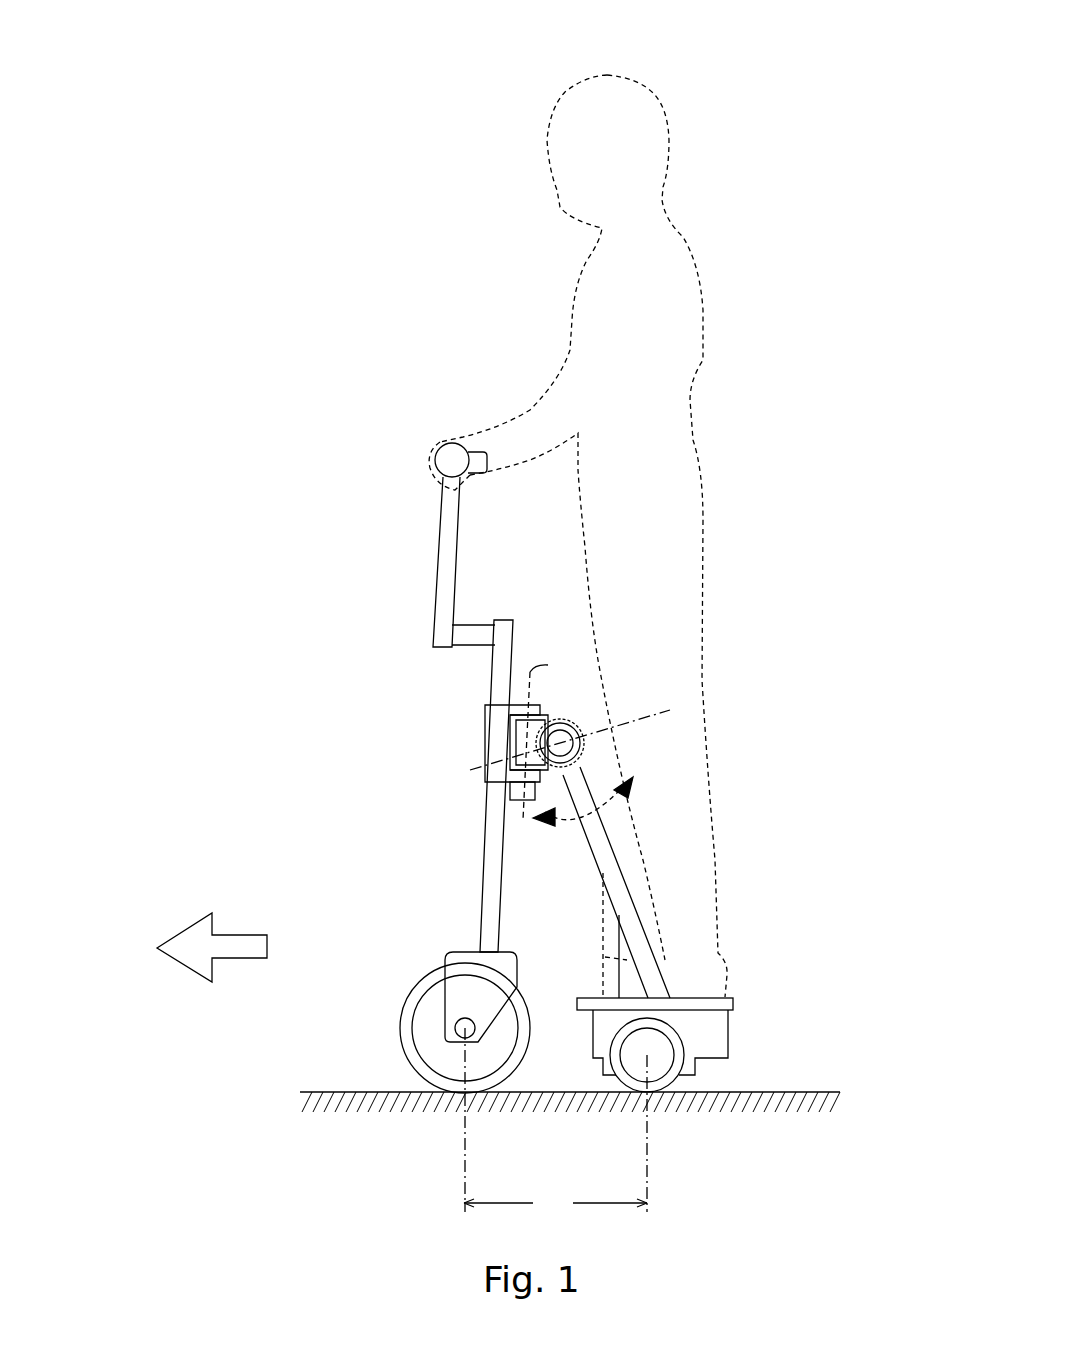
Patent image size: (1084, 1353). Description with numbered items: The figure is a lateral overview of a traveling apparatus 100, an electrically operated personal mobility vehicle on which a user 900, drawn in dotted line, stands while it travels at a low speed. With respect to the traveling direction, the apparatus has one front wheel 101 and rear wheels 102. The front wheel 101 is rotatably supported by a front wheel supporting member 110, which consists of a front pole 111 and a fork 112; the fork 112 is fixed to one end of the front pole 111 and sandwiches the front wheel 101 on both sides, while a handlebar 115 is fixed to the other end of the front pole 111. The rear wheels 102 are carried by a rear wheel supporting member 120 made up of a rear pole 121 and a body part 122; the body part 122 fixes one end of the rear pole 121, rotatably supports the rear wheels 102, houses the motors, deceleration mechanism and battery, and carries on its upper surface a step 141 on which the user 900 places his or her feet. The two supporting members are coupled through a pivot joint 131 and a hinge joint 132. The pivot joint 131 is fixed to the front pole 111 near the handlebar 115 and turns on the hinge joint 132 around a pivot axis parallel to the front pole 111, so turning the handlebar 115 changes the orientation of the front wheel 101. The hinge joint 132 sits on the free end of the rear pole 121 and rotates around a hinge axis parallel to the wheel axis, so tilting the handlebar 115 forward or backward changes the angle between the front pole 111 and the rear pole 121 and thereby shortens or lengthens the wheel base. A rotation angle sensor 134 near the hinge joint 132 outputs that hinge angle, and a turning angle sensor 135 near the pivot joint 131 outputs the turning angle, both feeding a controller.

The user 900 is at (700, 95).
The traveling apparatus 100 is at (284, 420).
The handlebar 115 is at (445, 450).
The front wheel supporting member 110 is at (370, 853).
The front pole 111 is at (490, 890).
The fork 112 is at (468, 962).
The front wheel 101 is at (432, 1018).
The pivot joint 131 is at (498, 730).
The hinge joint 132 is at (533, 745).
The turning angle sensor 135 is at (520, 790).
The rotation angle sensor 134 is at (560, 743).
The rear wheel supporting member 120 is at (825, 950).
The rear pole 121 is at (640, 940).
The body part 122 is at (713, 1027).
The step 141 is at (587, 1003).
The rear wheels 102 is at (667, 1063).